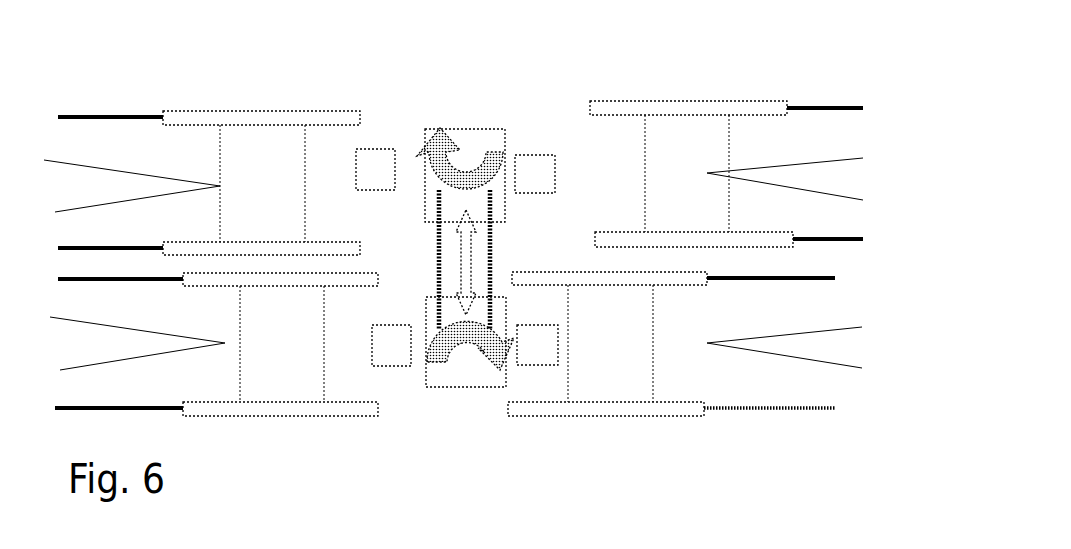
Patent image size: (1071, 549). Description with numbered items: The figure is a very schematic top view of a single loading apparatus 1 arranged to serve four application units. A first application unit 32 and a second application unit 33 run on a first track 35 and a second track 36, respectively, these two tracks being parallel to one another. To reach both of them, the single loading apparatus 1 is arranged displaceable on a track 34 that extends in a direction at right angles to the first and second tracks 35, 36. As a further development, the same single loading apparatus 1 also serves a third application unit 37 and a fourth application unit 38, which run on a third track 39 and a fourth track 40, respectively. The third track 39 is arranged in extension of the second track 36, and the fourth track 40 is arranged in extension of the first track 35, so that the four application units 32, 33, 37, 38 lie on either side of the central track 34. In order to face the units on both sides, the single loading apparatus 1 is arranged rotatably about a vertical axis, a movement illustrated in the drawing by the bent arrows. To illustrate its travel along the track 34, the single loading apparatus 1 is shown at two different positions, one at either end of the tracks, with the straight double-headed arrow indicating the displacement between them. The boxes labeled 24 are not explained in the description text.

The single loading apparatus 1 is at (460, 148).
The processing zone 24 is at (361, 184).
The first application unit 32 is at (606, 419).
The second application unit 33 is at (681, 99).
The track 34 is at (495, 258).
The first track 35 is at (812, 413).
The second track 36 is at (834, 104).
The third application unit 37 is at (259, 110).
The fourth application unit 38 is at (313, 419).
The third track 39 is at (102, 114).
The fourth track 40 is at (164, 412).